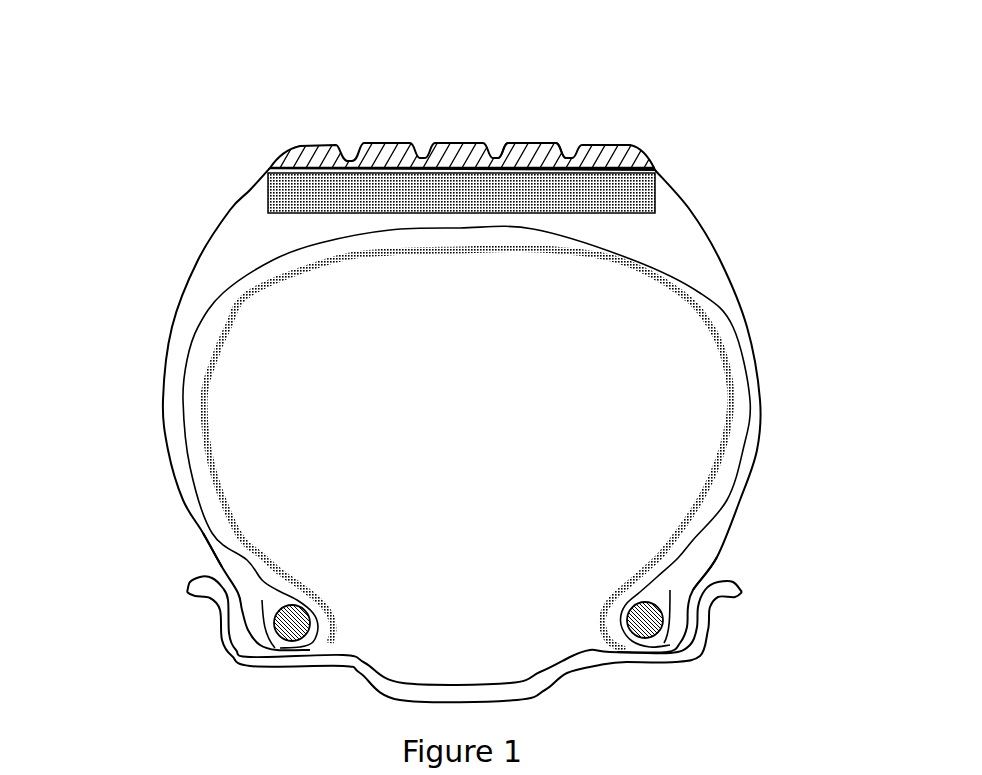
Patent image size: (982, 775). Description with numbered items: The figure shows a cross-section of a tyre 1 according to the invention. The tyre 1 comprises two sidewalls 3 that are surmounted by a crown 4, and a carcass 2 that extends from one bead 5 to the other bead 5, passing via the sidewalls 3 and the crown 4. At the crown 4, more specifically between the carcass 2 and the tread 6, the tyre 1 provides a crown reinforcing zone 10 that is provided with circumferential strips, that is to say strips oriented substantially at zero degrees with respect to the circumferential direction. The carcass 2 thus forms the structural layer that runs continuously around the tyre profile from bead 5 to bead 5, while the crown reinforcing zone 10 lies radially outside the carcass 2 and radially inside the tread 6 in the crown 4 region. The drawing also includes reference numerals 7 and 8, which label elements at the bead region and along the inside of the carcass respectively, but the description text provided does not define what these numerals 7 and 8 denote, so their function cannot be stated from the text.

The tyre 1 is at (135, 200).
The carcass 2 is at (185, 433).
The sidewalls 3 is at (743, 377).
The crown 4 is at (360, 135).
The bead 5 is at (220, 545).
The tread 6 is at (537, 157).
The bead core 7 is at (642, 622).
The inner liner sealing layer 8 is at (223, 340).
The crown reinforcing zone 10 is at (618, 195).